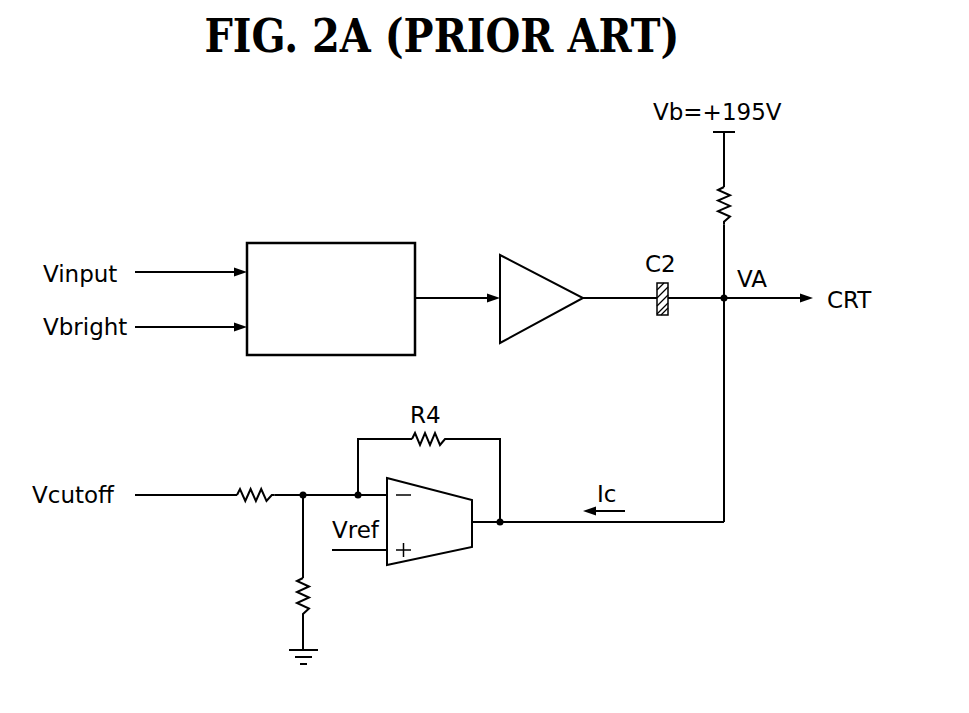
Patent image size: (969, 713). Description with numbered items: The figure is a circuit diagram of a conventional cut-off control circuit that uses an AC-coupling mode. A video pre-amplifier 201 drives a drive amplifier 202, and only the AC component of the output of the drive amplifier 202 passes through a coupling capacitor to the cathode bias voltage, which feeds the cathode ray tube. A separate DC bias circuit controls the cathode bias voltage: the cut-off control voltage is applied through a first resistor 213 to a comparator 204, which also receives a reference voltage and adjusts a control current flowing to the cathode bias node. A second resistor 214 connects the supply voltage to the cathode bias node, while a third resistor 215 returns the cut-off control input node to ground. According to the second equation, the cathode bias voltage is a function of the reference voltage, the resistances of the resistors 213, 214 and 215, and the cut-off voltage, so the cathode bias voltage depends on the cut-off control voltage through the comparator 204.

The video pre-amplifier 201 is at (330, 243).
The drive amplifier 202 is at (562, 313).
The comparator 204 is at (438, 556).
The resistor 213 is at (253, 507).
The resistor 214 is at (710, 207).
The resistor 215 is at (313, 599).